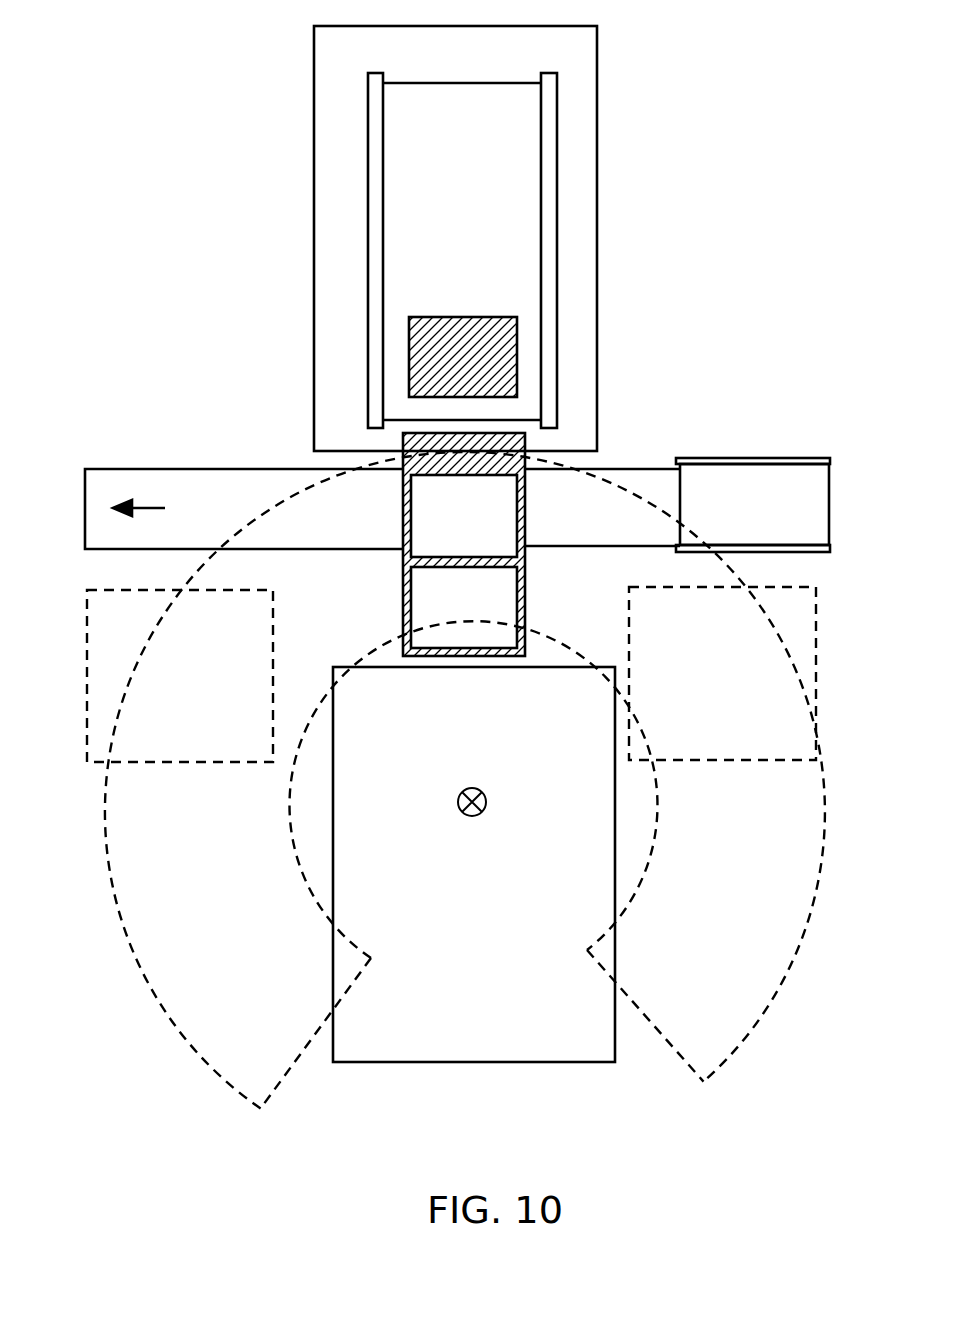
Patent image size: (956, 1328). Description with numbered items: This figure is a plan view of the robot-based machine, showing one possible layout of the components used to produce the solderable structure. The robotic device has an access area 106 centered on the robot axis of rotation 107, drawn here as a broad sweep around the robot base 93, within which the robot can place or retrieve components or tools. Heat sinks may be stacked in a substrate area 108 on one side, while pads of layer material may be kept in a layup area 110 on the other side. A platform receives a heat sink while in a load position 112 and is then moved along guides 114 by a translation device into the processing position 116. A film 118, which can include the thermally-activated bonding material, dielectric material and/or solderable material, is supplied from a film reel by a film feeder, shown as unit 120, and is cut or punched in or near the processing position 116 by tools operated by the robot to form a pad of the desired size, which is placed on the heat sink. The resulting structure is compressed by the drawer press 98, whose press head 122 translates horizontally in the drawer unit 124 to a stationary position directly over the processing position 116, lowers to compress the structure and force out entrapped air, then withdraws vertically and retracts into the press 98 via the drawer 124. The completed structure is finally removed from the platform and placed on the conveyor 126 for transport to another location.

The base/housing 93 is at (519, 1062).
The drawer press 98 is at (597, 251).
The access area 106 is at (788, 968).
The robot axis of rotation 107 is at (487, 797).
The substrate area 108 is at (818, 640).
The layup area 110 is at (87, 640).
The load position 112 is at (412, 611).
The guides 114 is at (527, 575).
The processing position 116 is at (412, 521).
The film 118 is at (638, 468).
The end unit 120 is at (800, 458).
The press head 122 is at (460, 325).
The drawer unit 124 is at (383, 300).
The conveyor 126 is at (192, 468).